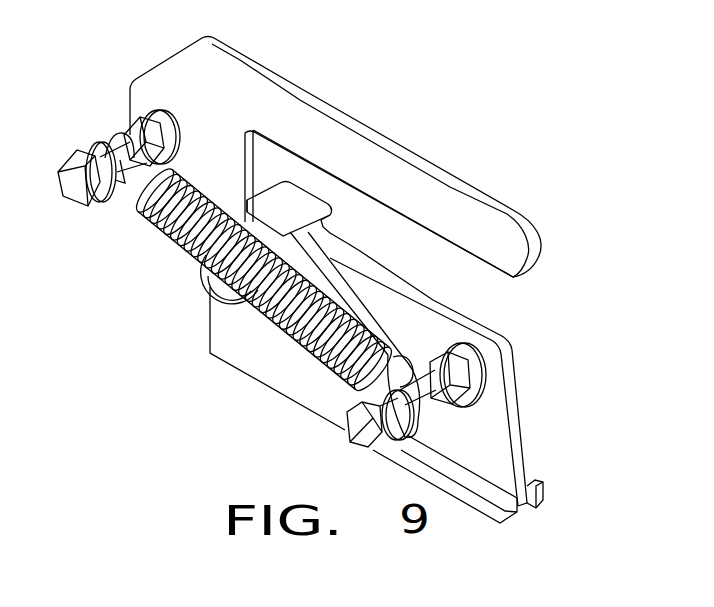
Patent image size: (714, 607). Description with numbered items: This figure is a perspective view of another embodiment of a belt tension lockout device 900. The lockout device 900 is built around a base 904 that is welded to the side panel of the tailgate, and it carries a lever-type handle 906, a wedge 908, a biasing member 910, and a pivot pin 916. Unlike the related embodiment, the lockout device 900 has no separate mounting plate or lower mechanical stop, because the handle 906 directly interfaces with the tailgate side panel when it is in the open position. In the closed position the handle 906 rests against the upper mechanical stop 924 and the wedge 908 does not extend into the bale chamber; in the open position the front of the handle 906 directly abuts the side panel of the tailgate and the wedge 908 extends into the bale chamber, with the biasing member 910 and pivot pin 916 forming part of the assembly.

The lockout device 900 is at (446, 128).
The base 904 is at (209, 347).
The handle 906 is at (264, 72).
The wedge 908 is at (518, 414).
The biasing member 910 is at (160, 225).
The pivot pin 916 is at (213, 286).
The upper mechanical stop 924 is at (289, 207).